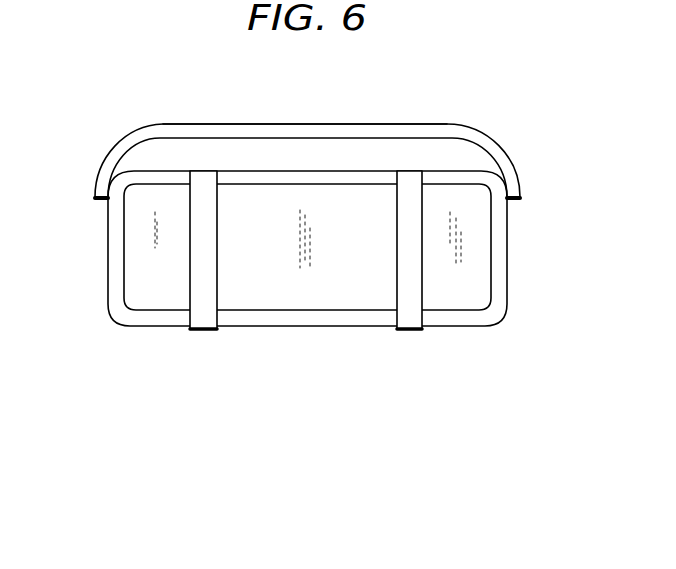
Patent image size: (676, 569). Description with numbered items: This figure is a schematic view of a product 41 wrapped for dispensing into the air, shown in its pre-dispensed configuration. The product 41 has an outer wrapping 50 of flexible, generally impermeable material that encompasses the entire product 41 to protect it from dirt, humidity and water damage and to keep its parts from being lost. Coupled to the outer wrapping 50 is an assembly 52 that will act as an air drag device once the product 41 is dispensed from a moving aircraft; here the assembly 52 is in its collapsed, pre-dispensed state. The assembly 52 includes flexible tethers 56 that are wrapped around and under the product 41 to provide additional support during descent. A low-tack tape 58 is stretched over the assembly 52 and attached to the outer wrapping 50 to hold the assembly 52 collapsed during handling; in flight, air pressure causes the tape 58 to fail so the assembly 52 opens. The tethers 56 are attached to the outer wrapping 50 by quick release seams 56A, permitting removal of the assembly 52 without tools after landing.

The product 41 is at (491, 222).
The outer wrapping 50 is at (507, 260).
The assembly 52 is at (321, 136).
The flexible tethers 56 is at (193, 322).
The quick release seams 56A is at (188, 298).
The low-tack tape 58 is at (232, 124).